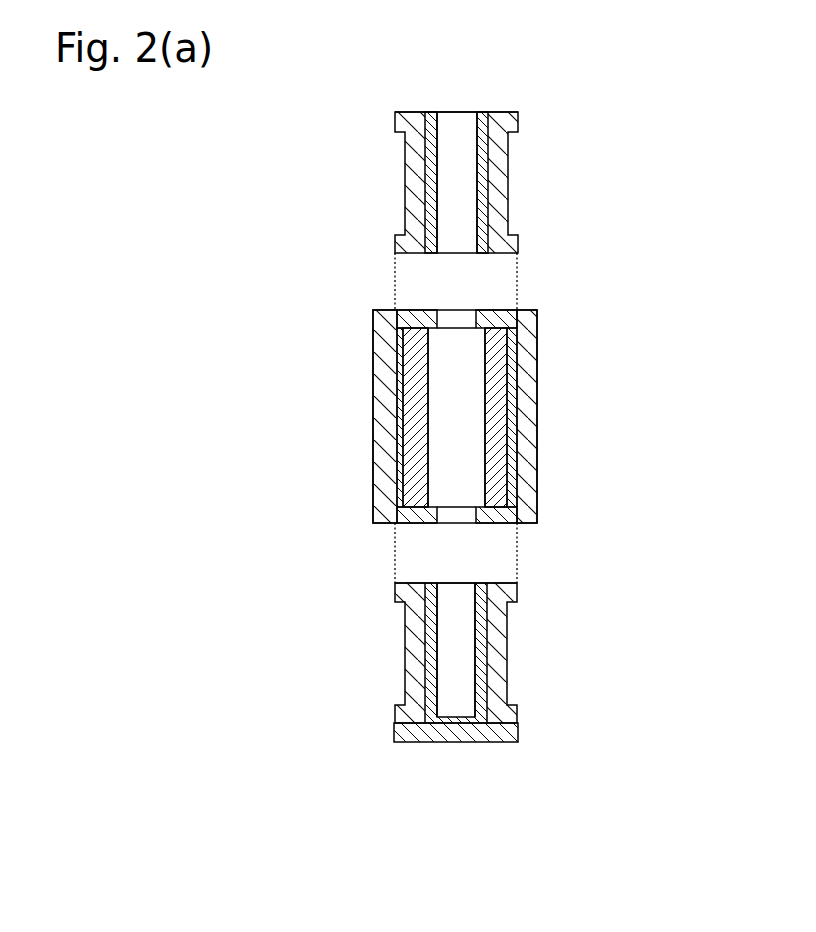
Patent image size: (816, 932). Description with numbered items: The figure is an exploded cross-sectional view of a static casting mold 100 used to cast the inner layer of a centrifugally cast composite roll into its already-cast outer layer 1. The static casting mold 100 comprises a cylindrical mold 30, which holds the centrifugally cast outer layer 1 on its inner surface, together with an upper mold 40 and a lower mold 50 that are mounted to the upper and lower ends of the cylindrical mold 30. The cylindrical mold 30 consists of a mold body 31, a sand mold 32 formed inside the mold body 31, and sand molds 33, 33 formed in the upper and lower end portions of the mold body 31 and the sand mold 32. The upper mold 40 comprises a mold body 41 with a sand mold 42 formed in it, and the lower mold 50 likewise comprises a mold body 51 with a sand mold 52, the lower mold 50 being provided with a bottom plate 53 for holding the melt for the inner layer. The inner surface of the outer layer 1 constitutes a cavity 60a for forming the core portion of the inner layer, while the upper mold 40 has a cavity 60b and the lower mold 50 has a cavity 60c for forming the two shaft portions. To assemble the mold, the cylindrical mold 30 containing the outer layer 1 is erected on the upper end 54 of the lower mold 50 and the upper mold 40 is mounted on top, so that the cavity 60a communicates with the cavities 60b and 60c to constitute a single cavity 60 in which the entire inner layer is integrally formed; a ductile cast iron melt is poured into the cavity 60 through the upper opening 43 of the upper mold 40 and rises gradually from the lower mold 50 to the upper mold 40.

The outer layer 1 is at (515, 462).
The cylindrical mold 30 is at (578, 387).
The mold body 31 is at (528, 422).
The sand mold 32 is at (516, 352).
The sand molds 33 is at (500, 309).
The upper mold 40 is at (573, 177).
The mold body 41 is at (505, 148).
The sand mold 42 is at (485, 198).
The upper opening 43 is at (458, 112).
The lower mold 50 is at (572, 653).
The mold body 51 is at (498, 622).
The sand mold 52 is at (485, 678).
The bottom plate 53 is at (518, 735).
The upper end 54 is at (465, 583).
The cavity 60 is at (315, 177).
The cavity 60a is at (450, 425).
The cavity 60b is at (452, 172).
The cavity 60c is at (450, 637).
The static casting mold 100 is at (657, 322).